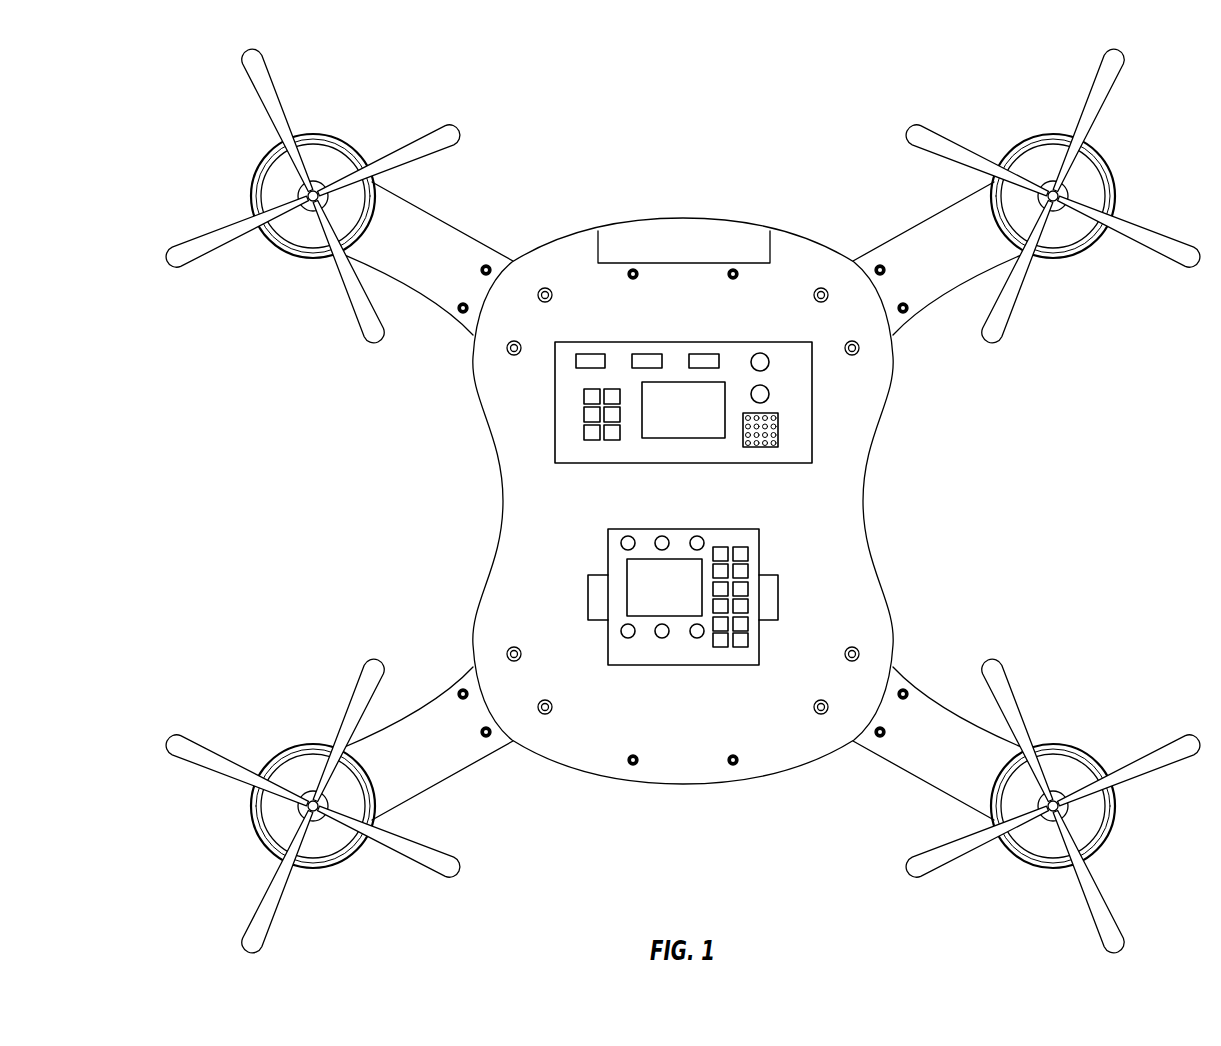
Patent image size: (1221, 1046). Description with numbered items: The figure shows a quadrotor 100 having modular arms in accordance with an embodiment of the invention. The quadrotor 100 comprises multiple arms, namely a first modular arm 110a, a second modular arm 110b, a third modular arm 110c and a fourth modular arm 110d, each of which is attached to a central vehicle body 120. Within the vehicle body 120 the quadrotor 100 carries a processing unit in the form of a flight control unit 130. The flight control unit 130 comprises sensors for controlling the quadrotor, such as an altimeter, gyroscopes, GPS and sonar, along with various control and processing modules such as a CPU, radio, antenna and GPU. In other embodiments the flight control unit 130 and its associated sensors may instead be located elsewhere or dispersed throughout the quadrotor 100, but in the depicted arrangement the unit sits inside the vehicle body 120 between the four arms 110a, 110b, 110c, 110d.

The quadrotor 100 is at (710, 173).
The modular arm 110a is at (1118, 163).
The modular arm 110b is at (1077, 738).
The modular arm 110c is at (283, 732).
The modular arm 110d is at (292, 260).
The vehicle body 120 is at (502, 497).
The flight control unit 130 is at (790, 400).